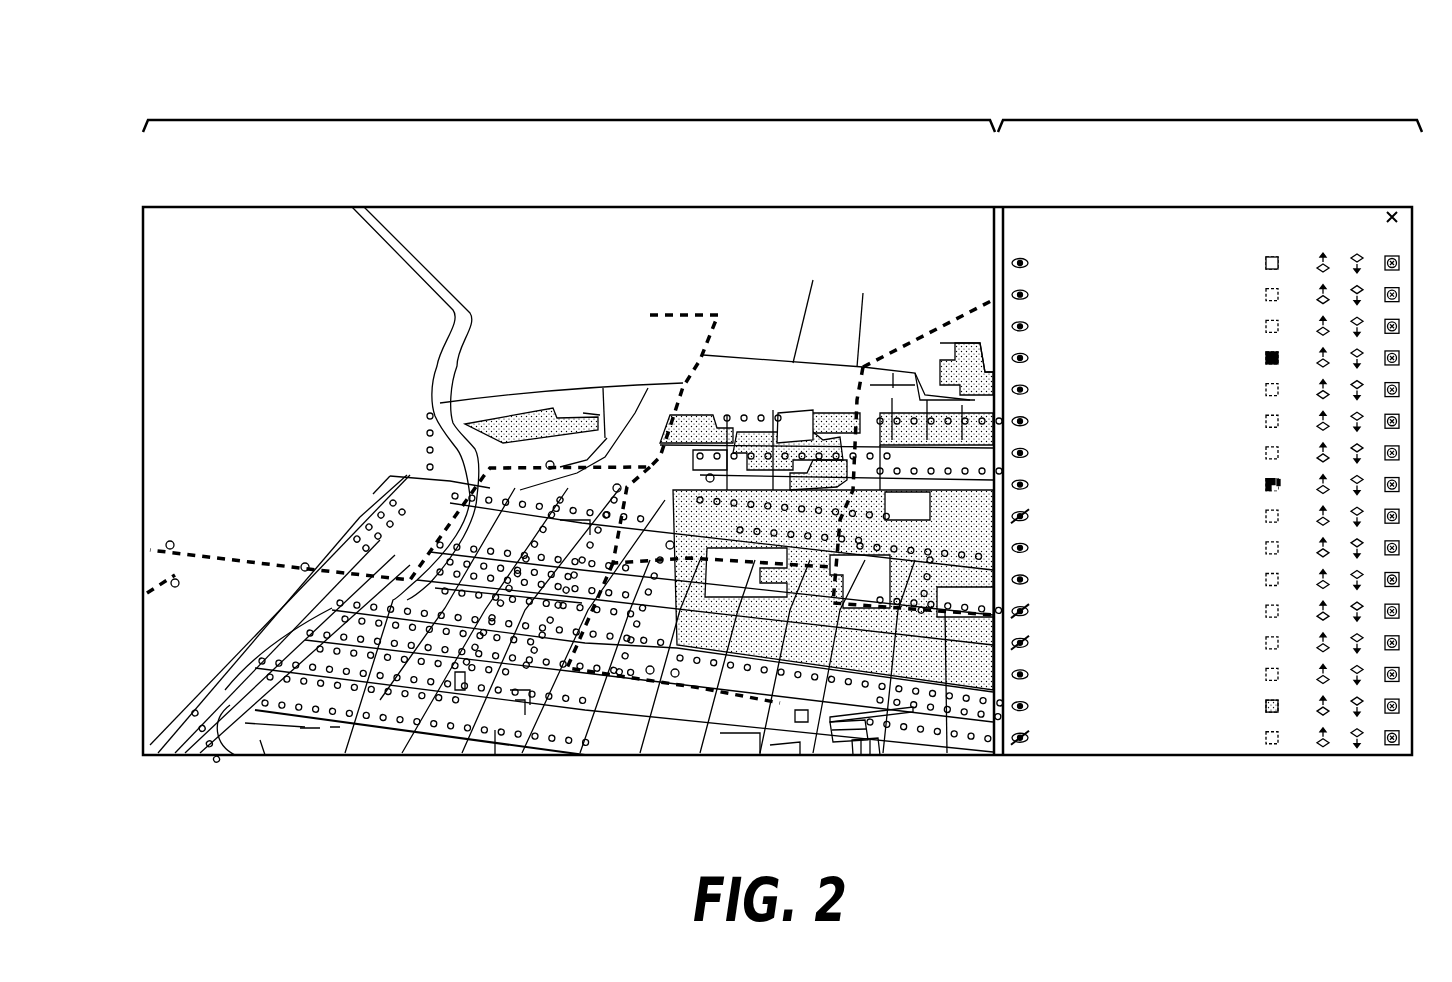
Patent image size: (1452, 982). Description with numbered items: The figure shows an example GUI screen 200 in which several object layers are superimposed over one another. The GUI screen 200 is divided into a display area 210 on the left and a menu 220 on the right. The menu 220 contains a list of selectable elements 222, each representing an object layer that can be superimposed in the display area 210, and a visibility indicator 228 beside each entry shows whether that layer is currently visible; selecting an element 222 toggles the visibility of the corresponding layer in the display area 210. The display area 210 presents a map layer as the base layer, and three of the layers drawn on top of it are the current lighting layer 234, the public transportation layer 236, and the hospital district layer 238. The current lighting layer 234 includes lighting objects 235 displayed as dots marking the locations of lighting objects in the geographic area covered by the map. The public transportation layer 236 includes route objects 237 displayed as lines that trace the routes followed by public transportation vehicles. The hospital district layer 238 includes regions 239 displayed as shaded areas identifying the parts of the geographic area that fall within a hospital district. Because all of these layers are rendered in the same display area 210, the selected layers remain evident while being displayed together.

The GUI screen 200 is at (166, 87).
The display area 210 is at (540, 118).
The menu 220 is at (1208, 118).
The selectable elements 222 is at (1192, 765).
The visibility indicator 228 is at (1022, 742).
The current lighting layer 234 is at (1100, 246).
The public transportation layer 236 is at (1207, 335).
The lighting objects 235 is at (305, 737).
The route objects 237 is at (822, 736).
The hospital district layer 238 is at (1172, 707).
The regions 239 is at (963, 347).